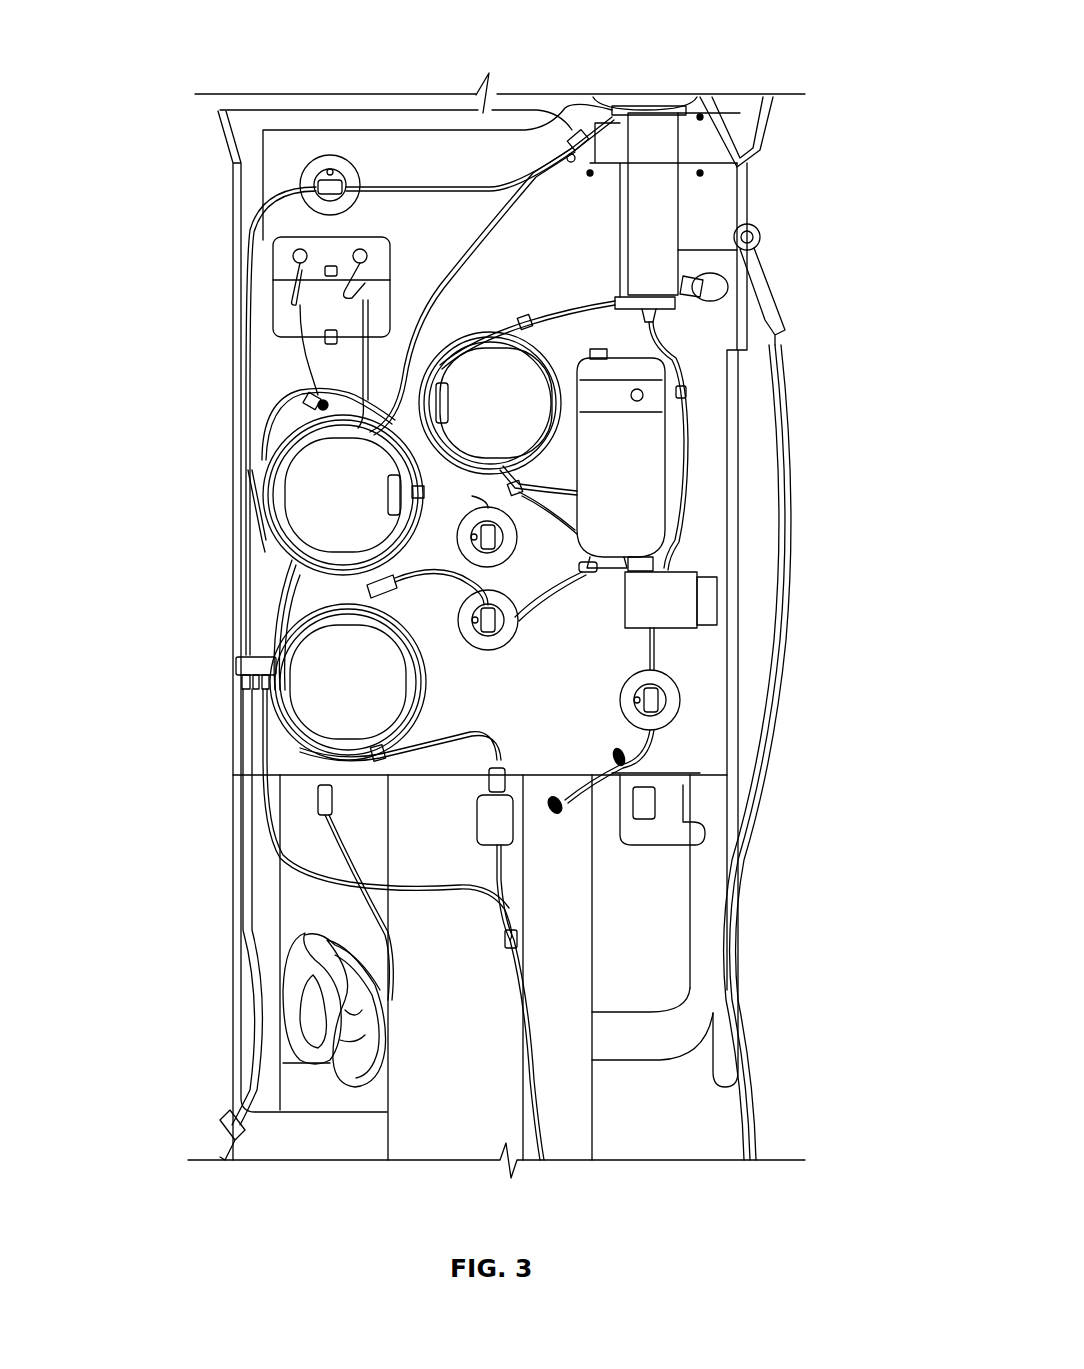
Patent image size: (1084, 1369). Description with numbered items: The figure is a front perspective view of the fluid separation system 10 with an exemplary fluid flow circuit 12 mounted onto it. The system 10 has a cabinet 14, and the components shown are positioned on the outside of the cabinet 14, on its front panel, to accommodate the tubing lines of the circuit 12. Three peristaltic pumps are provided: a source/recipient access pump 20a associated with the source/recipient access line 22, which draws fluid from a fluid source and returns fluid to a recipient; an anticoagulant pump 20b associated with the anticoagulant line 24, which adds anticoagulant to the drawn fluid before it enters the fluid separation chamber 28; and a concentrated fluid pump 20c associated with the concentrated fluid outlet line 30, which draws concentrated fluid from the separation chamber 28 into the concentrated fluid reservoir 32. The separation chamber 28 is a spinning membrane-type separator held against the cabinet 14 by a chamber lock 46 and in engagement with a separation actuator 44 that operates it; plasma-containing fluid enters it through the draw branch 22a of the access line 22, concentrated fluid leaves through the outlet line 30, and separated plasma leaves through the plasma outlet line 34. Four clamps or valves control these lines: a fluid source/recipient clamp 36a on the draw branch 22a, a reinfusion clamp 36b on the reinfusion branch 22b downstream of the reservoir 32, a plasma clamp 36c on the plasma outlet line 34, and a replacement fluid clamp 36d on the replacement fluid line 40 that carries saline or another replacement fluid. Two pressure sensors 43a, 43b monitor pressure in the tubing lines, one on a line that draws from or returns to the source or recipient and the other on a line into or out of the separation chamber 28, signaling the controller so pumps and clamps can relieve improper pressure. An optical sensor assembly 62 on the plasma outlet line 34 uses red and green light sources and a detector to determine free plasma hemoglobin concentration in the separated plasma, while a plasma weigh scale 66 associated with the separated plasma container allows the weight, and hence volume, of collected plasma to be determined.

The fluid separation system 10 is at (405, 1093).
The fluid flow circuit 12 is at (270, 195).
The cabinet 14 is at (559, 706).
The source/recipient access pump 20a is at (325, 667).
The anticoagulant pump 20b is at (318, 492).
The concentrated fluid pump 20c is at (473, 398).
The source/recipient access line 22 is at (380, 893).
The draw branch 22a is at (463, 250).
The reinfusion branch 22b is at (517, 614).
The anticoagulant line 24 is at (305, 878).
The fluid separation chamber 28 is at (657, 187).
The concentrated fluid outlet line 30 is at (551, 335).
The concentrated fluid reservoir 32 is at (623, 490).
The plasma outlet line 34 is at (687, 460).
The fluid source/recipient clamp 36a is at (597, 567).
The reinfusion clamp 36b is at (588, 566).
The plasma clamp 36c is at (658, 703).
The replacement fluid clamp 36d is at (327, 168).
The replacement fluid line 40 is at (483, 188).
The pressure sensor 43a is at (290, 258).
The pressure sensor 43b is at (360, 257).
The separation actuator 44 is at (690, 97).
The chamber lock 46 is at (740, 305).
The optical sensor assembly 62 is at (673, 603).
The plasma weigh scale 66 is at (658, 815).